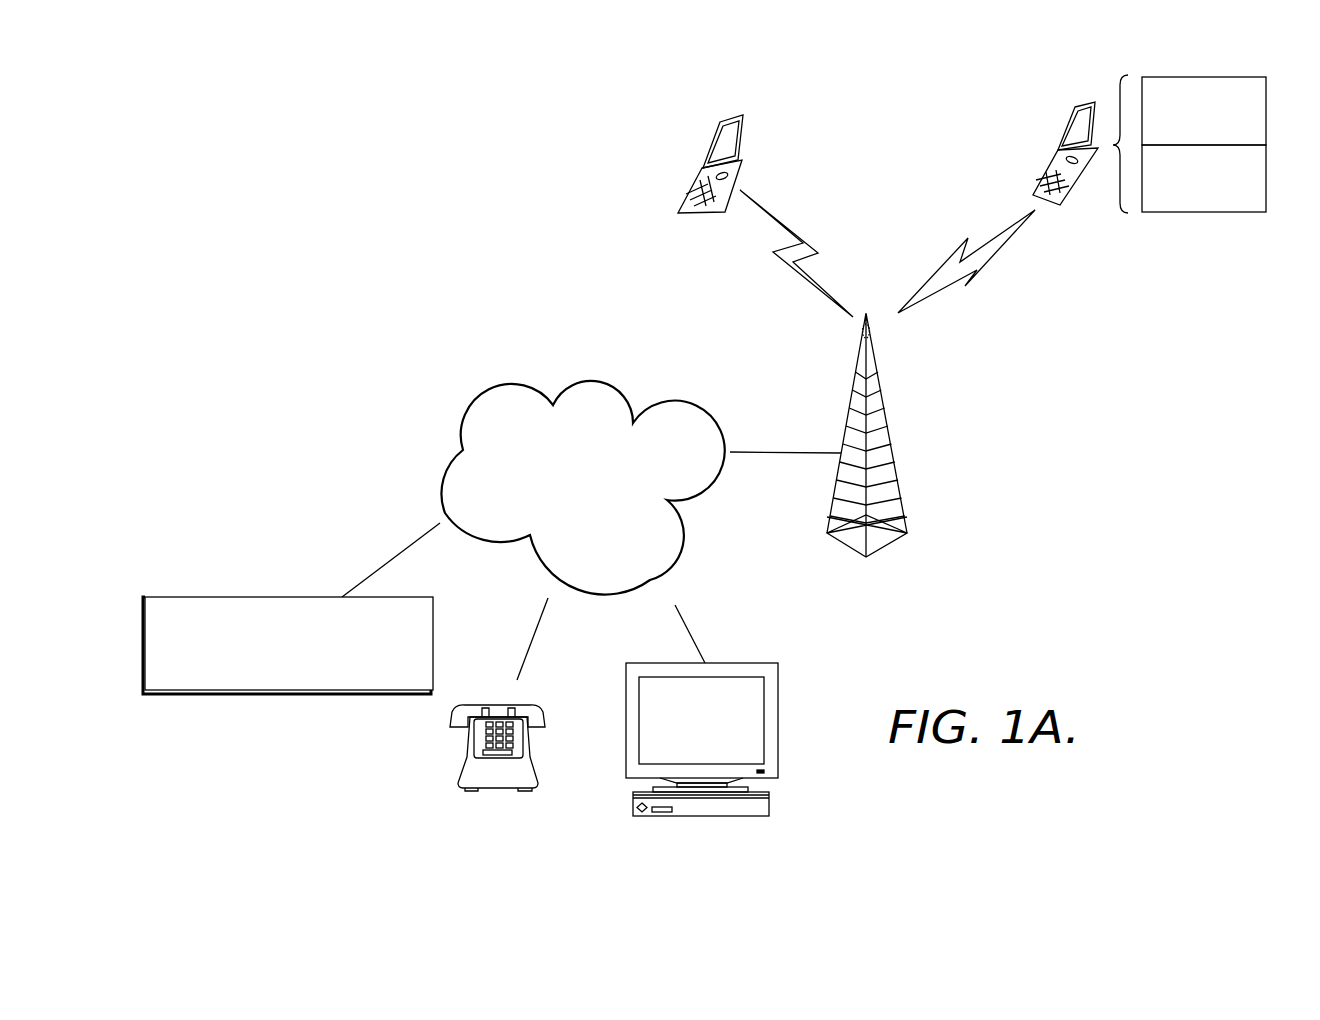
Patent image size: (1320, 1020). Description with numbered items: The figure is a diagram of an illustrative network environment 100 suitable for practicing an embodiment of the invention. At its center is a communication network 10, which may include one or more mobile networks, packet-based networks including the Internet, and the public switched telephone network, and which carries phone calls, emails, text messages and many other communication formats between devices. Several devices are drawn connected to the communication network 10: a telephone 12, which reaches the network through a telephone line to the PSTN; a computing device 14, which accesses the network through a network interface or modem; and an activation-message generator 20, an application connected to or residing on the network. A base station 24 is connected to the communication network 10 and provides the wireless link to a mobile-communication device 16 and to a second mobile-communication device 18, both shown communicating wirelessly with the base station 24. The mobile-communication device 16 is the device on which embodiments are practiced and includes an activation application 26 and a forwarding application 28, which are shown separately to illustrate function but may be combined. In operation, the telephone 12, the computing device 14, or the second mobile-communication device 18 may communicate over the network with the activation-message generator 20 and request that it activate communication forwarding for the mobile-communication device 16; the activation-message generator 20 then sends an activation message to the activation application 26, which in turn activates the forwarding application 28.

The network environment 100 is at (425, 148).
The communication network 10 is at (596, 378).
The telephone 12 is at (498, 788).
The computing device 14 is at (692, 817).
The mobile-communication device 16 is at (1045, 174).
The second mobile-communication device 18 is at (742, 143).
The activation-message generator 20 is at (178, 597).
The base station 24 is at (898, 467).
The activation application 26 is at (1203, 77).
The forwarding application 28 is at (1202, 212).